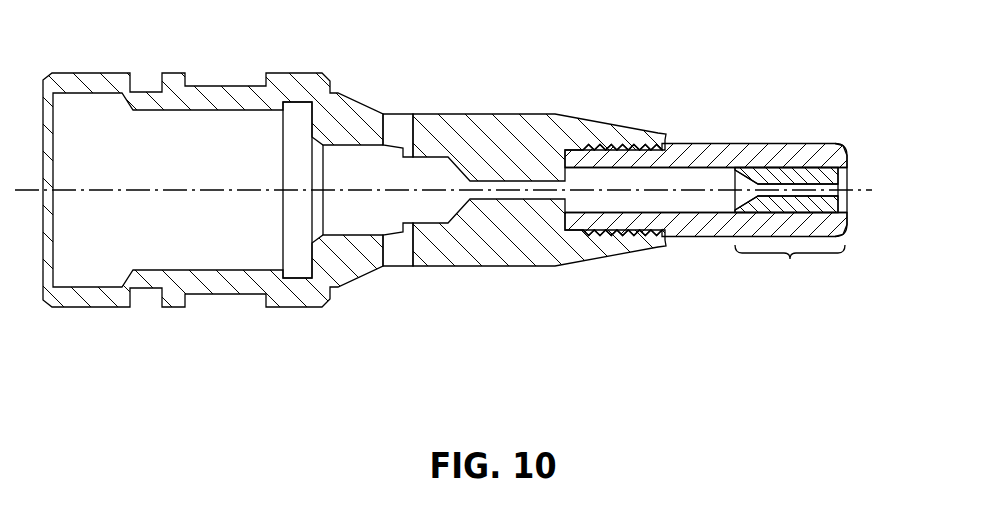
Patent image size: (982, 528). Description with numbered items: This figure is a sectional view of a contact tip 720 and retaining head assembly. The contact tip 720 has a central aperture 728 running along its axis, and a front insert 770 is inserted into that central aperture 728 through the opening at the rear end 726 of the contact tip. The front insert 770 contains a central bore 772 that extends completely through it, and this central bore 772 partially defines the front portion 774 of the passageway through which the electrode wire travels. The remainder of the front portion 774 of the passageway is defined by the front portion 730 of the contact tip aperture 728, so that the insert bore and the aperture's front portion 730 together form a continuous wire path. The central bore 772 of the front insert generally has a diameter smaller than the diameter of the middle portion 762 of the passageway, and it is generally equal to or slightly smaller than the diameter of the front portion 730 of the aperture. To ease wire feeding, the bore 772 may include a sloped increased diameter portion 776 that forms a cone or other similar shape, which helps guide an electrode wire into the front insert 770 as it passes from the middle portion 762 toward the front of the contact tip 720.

The contact tip 720 is at (853, 125).
The rear end 726 is at (576, 230).
The central aperture 728 is at (667, 208).
The front portion of the contact tip aperture 730 is at (841, 190).
The middle portion 762 is at (627, 187).
The front insert 770 is at (797, 167).
The central bore 772 is at (808, 187).
The front portion of the passageway 774 is at (790, 265).
The sloped increased diameter portion 776 is at (726, 167).